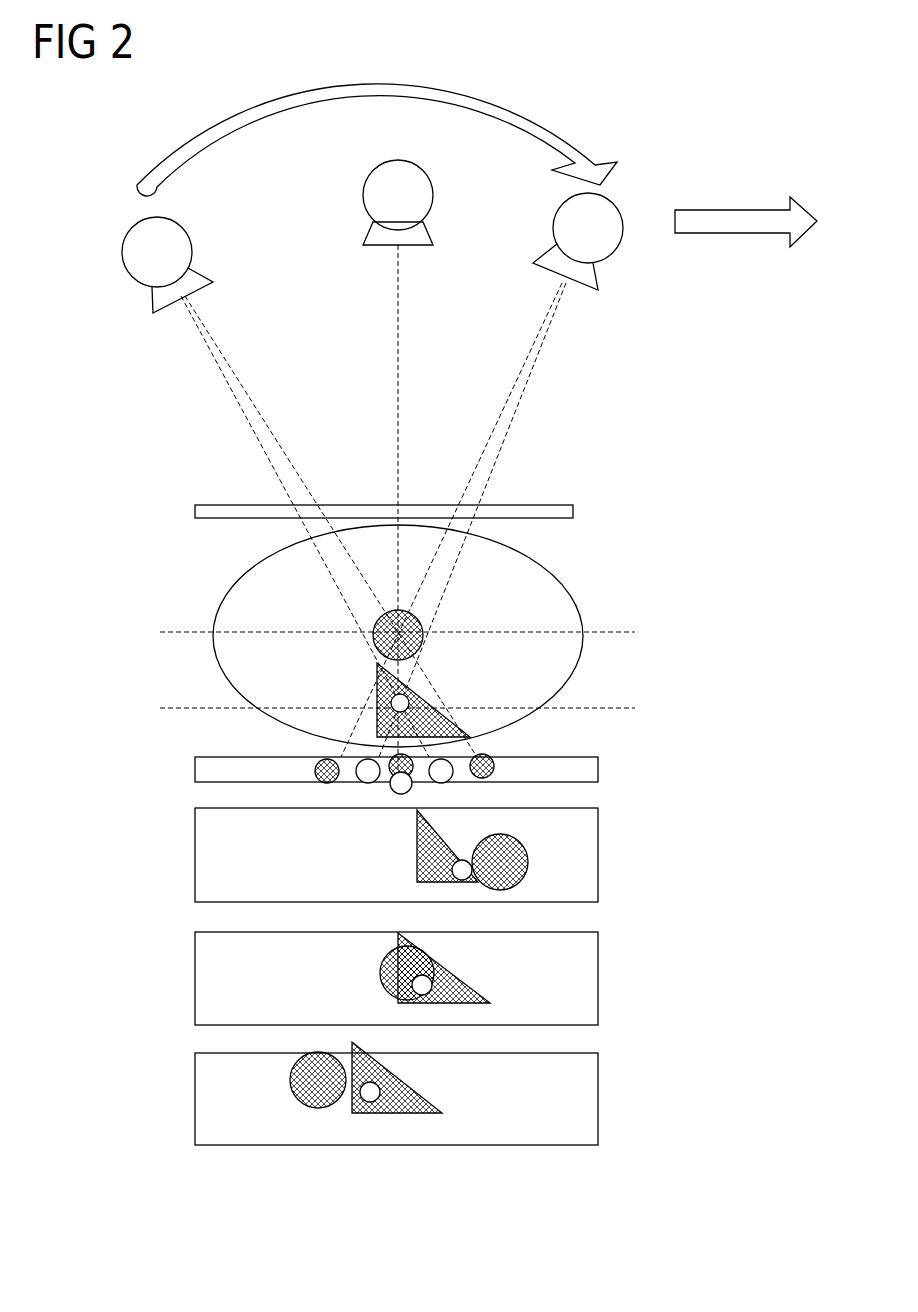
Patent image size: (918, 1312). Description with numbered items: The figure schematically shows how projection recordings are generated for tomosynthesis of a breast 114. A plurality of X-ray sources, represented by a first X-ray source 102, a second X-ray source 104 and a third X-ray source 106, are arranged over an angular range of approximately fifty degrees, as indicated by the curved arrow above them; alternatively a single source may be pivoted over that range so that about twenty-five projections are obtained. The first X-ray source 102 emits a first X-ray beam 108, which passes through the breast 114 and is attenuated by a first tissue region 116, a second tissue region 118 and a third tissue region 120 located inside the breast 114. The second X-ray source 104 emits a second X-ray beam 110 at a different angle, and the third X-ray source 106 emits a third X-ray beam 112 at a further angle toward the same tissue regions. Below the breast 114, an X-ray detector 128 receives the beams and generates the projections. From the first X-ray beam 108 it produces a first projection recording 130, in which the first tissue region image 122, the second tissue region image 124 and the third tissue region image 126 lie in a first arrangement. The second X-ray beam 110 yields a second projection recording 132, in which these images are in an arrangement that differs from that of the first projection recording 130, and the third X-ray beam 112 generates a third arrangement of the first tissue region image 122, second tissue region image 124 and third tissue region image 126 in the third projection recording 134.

The first X-ray source 102 is at (127, 275).
The second X-ray source 104 is at (360, 202).
The third X-ray source 106 is at (610, 256).
The first X-ray beam 108 is at (228, 368).
The second X-ray beam 110 is at (397, 301).
The third X-ray beam 112 is at (532, 371).
The breast 114 is at (215, 616).
The first tissue region 116 is at (425, 627).
The second tissue region 118 is at (455, 727).
The third tissue region 120 is at (432, 692).
The first tissue region image 122 is at (529, 860).
The second tissue region image 124 is at (415, 865).
The third tissue region image 126 is at (463, 880).
The X-ray detector 128 is at (195, 770).
The first projection recording 130 is at (195, 867).
The second projection recording 132 is at (195, 987).
The third projection recording 134 is at (195, 1109).